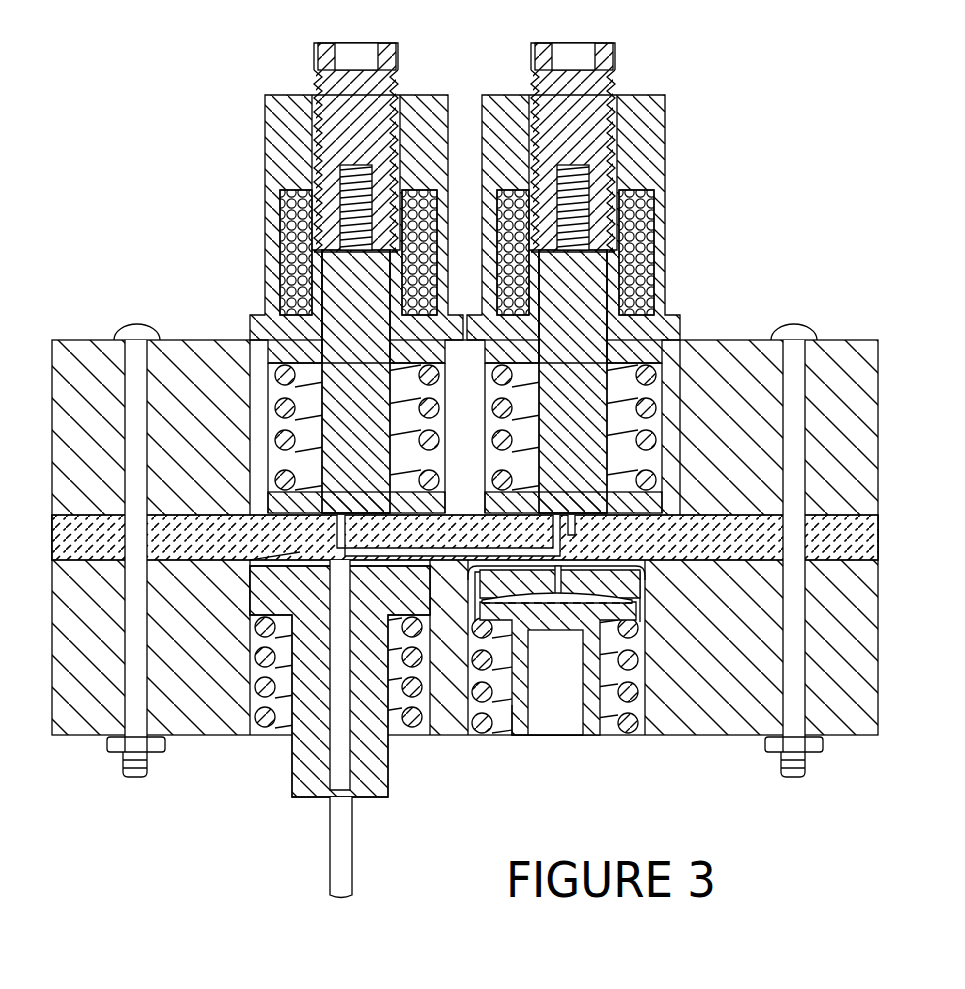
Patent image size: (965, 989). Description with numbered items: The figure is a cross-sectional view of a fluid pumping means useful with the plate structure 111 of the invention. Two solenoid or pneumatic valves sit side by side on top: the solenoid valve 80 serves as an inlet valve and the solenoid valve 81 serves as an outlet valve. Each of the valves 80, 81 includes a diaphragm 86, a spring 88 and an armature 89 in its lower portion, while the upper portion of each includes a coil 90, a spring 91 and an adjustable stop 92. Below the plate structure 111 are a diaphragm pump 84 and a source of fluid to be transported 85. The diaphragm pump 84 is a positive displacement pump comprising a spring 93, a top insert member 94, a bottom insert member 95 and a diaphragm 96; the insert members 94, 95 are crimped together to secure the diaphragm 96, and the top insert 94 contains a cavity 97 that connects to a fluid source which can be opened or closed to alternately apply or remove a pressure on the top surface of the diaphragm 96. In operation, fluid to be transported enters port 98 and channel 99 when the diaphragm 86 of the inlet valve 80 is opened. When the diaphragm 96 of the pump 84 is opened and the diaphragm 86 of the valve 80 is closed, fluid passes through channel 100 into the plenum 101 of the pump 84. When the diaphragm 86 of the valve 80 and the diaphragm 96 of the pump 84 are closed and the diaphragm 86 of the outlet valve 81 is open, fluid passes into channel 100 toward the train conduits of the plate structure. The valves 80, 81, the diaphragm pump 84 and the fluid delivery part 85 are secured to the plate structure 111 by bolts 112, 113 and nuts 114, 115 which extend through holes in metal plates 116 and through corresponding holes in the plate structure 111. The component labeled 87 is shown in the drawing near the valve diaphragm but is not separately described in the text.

The solenoid valve 80 is at (230, 122).
The solenoid valve 81 is at (712, 110).
The diaphragm pump 84 is at (566, 705).
The source of fluid to be transported 85 is at (388, 765).
The diaphragm 86 is at (268, 505).
The spring cup 87 is at (266, 470).
The spring 88 is at (270, 385).
The armature 89 is at (340, 380).
The coil 90 is at (280, 215).
The spring 91 is at (340, 185).
The adjustable stop 92 is at (400, 72).
The spring 93 is at (645, 682).
The top insert member 94 is at (520, 737).
The bottom insert member 95 is at (636, 596).
The diaphragm 96 is at (642, 612).
The cavity 97 is at (555, 682).
The port 98 is at (352, 838).
The channel 99 is at (250, 560).
The channel 100 is at (436, 572).
The plenum 101 is at (575, 535).
The plate structure 111 is at (880, 525).
The bolt 112 is at (794, 325).
The bolt 113 is at (137, 325).
The nut 114 is at (823, 745).
The nut 115 is at (165, 745).
The metal plate 116 is at (850, 425).